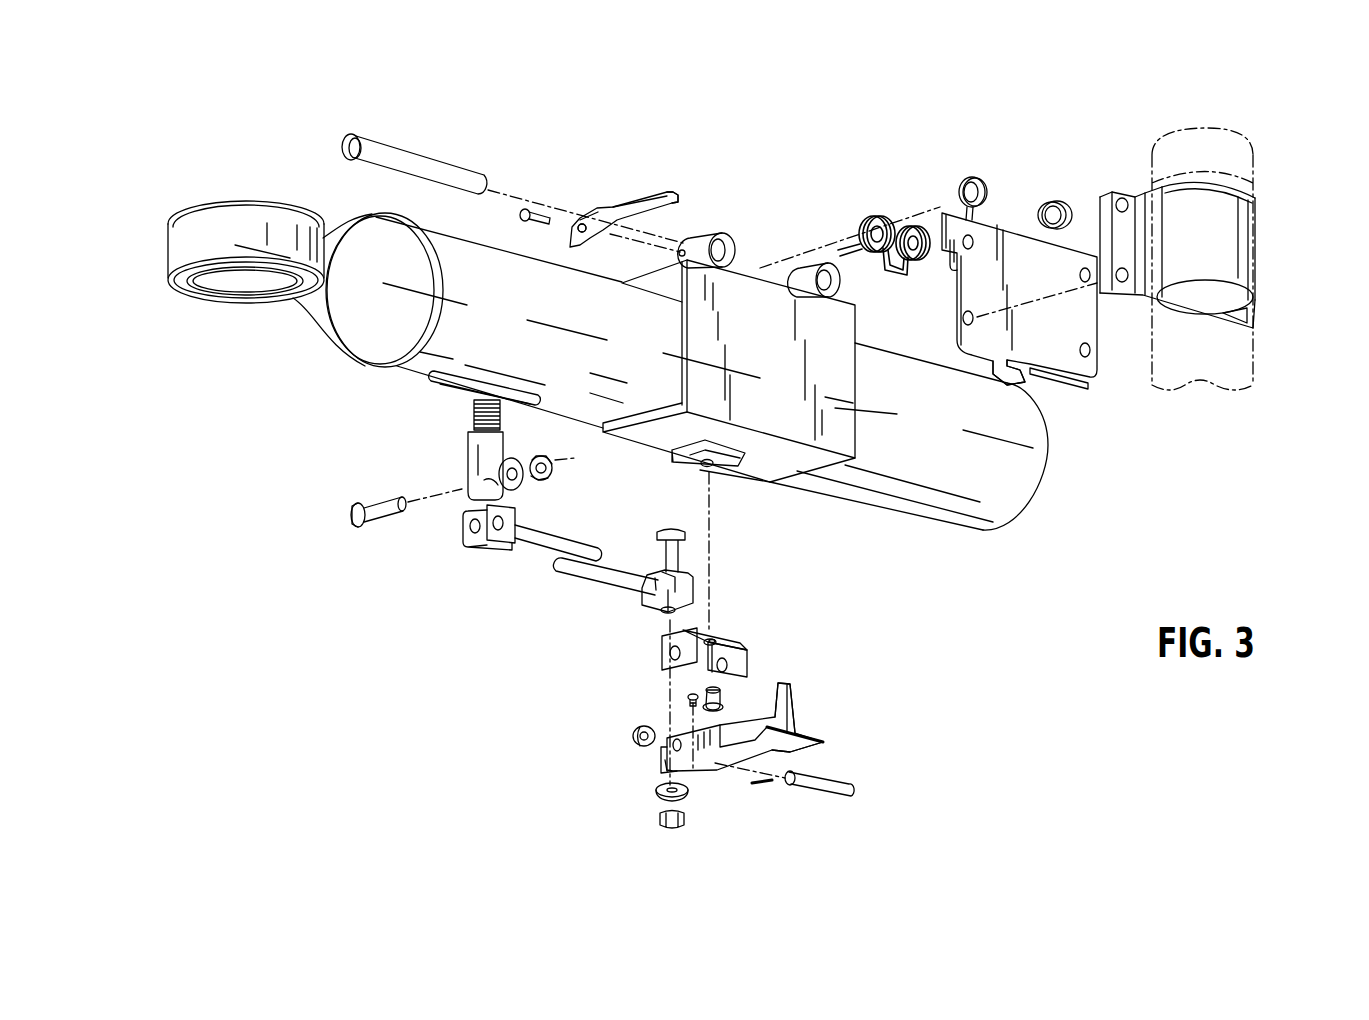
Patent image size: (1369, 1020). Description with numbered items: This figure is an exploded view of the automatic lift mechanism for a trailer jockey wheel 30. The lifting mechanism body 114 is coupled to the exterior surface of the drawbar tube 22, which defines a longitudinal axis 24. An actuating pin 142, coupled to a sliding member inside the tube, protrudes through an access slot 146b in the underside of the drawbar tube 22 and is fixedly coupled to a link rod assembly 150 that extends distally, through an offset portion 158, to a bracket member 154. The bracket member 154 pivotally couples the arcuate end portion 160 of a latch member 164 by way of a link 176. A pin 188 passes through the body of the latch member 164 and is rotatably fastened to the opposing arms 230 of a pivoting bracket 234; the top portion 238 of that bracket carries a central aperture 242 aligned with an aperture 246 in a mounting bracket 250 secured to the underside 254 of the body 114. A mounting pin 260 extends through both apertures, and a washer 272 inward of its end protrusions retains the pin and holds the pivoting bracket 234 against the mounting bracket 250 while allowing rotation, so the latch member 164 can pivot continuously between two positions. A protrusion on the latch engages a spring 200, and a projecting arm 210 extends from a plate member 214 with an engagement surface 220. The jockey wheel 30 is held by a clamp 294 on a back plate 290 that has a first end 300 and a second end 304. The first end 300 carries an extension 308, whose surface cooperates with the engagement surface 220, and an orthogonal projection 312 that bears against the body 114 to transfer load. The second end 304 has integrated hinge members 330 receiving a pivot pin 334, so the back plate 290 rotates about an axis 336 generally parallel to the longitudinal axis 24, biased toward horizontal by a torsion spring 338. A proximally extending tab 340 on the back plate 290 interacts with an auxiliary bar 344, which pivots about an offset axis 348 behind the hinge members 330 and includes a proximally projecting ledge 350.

The drawbar tube 22 is at (1010, 517).
The longitudinal axis 24 is at (138, 222).
The jockey wheel 30 is at (1250, 375).
The lifting mechanism body 114 is at (842, 333).
The actuating pin 142 is at (478, 453).
The access slot 146b is at (443, 380).
The link rod assembly 150 is at (540, 540).
The bracket member 154 is at (648, 607).
The offset portion 158 is at (580, 577).
The end portion 160 is at (661, 762).
The latch member 164 is at (712, 762).
The link 176 is at (664, 552).
The pin 188 is at (825, 783).
The spring 200 is at (683, 698).
The projecting arm 210 is at (788, 720).
The plate member 214 is at (797, 742).
The engagement surface 220 is at (780, 680).
The opposing arms 230 is at (667, 660).
The pivoting bracket 234 is at (757, 640).
The top portion 238 is at (717, 627).
The aperture 242 is at (717, 632).
The aperture 246 is at (712, 467).
The mounting bracket 250 is at (670, 452).
The underside 254 is at (782, 465).
The mounting pin 260 is at (722, 692).
The washer 272 is at (693, 712).
The back plate 290 is at (1007, 232).
The clamp 294 is at (1243, 230).
The first end 300 is at (1040, 405).
The second end 304 is at (1011, 188).
The extension 308 is at (1020, 383).
The projection 312 is at (993, 370).
The hinge members 330 is at (1065, 207).
The pivot pin 334 is at (407, 162).
The axis 336 is at (572, 207).
The spring 338 is at (875, 213).
The tab 340 is at (950, 253).
The auxiliary bar 344 is at (630, 200).
The axis 348 is at (628, 242).
The ledge 350 is at (678, 200).